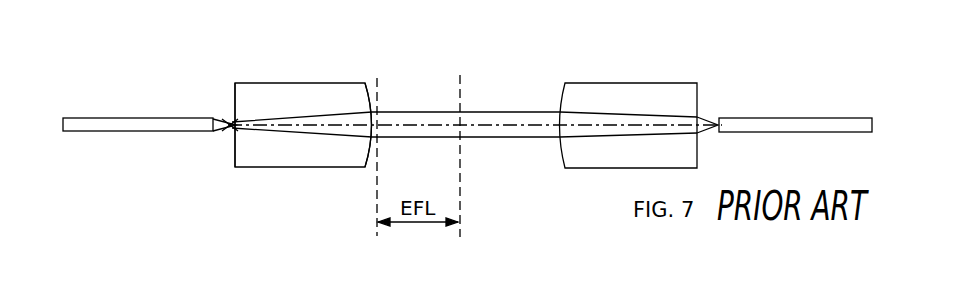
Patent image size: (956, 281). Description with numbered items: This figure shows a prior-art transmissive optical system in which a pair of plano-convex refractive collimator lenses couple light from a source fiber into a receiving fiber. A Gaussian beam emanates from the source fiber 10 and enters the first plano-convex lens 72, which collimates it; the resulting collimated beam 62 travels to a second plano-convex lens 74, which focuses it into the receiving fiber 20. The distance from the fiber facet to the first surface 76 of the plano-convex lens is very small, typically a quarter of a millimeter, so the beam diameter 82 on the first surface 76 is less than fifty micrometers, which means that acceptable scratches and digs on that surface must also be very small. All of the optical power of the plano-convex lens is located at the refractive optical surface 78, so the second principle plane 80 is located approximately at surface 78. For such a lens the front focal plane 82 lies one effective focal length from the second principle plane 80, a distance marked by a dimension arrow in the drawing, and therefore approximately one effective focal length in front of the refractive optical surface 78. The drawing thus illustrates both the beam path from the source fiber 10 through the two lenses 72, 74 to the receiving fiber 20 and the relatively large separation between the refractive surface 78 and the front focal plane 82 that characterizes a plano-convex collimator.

The source fiber 10 is at (83, 133).
The receiving fiber 20 is at (792, 133).
The collimated beam 62 is at (488, 108).
The plano-convex lens 72 is at (263, 93).
The second plano-convex lens 74 is at (612, 92).
The first surface 76 is at (232, 150).
The refractive optical surface 78 is at (378, 92).
The second principle plane 80 is at (368, 172).
The front focal plane 82 is at (462, 80).